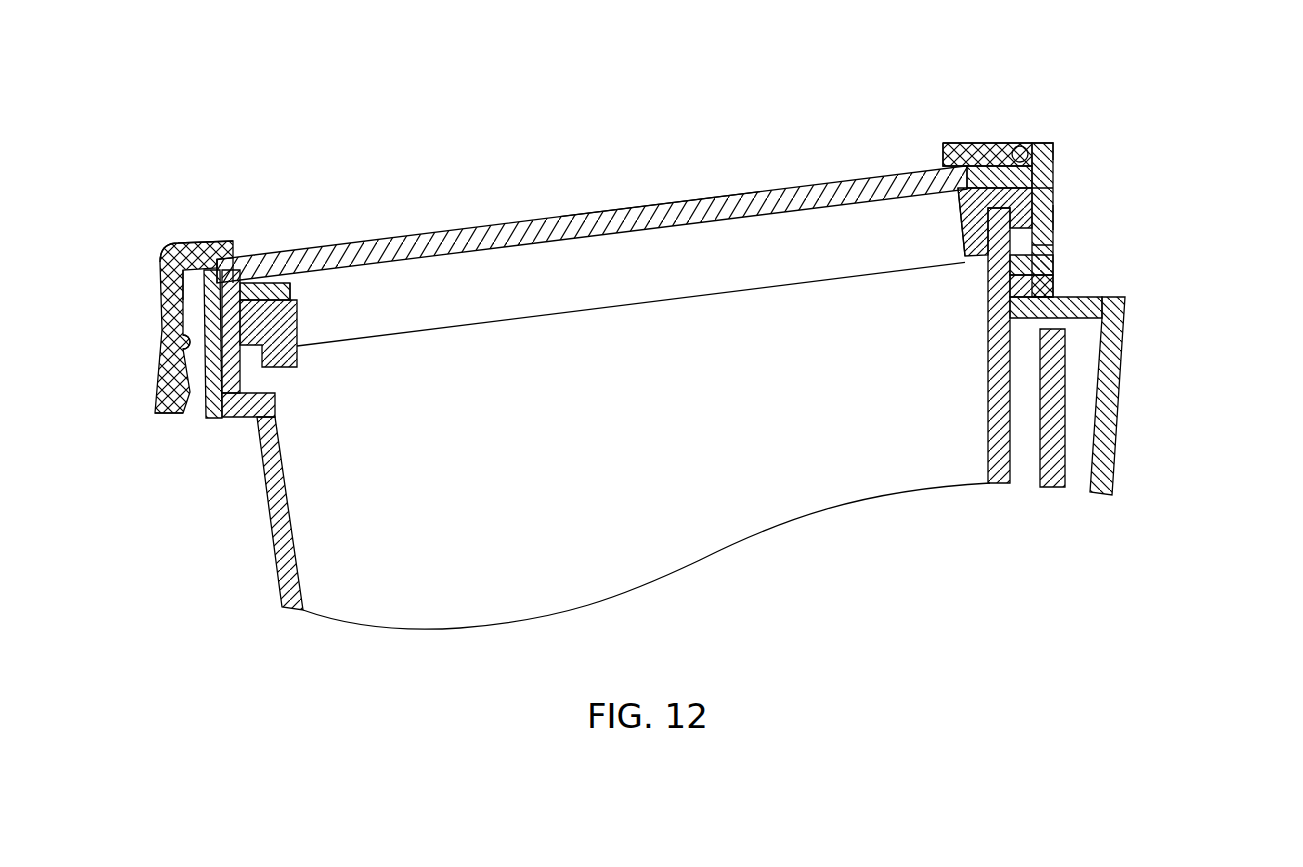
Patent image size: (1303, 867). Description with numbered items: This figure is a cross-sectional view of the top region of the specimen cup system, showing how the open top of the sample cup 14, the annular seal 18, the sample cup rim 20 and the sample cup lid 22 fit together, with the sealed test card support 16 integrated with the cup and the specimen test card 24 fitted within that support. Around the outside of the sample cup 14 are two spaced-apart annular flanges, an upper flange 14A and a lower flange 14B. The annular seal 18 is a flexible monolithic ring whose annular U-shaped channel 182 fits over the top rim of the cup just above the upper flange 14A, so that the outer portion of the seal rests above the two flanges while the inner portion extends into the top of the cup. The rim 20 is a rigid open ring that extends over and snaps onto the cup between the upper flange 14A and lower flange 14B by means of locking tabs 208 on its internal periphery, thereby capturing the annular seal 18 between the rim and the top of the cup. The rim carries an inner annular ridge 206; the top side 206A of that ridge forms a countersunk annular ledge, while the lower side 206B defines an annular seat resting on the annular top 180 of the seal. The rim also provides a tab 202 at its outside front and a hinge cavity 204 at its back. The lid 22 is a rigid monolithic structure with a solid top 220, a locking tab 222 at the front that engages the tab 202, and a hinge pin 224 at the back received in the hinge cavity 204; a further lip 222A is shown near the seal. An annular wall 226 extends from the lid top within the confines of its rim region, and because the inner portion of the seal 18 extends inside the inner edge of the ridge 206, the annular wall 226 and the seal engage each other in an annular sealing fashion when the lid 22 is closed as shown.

The sample cup 14 is at (280, 593).
The upper flange 14A is at (280, 376).
The lower flange 14B is at (225, 418).
The sealed test card support 16 is at (1115, 462).
The annular seal 18 is at (268, 362).
The sample cup rim 20 is at (1058, 215).
The sample cup lid 22 is at (405, 228).
The specimen test card 24 is at (1055, 496).
The annular top 180 is at (272, 255).
The annular U-shaped channel 182 is at (290, 283).
The tab 202 is at (184, 345).
The hinge cavity 204 is at (1062, 145).
The inner annular ridge 206 is at (172, 250).
The top side of inner annular ridge 206A is at (245, 238).
The lower side of inner annular ridge 206B is at (300, 350).
The locking tabs 208 is at (212, 415).
The solid top 220 is at (578, 205).
The locking tab 222 is at (165, 392).
The seal bead 222A is at (200, 245).
The hinge pin 224 is at (1045, 150).
The annular wall 226 is at (733, 283).